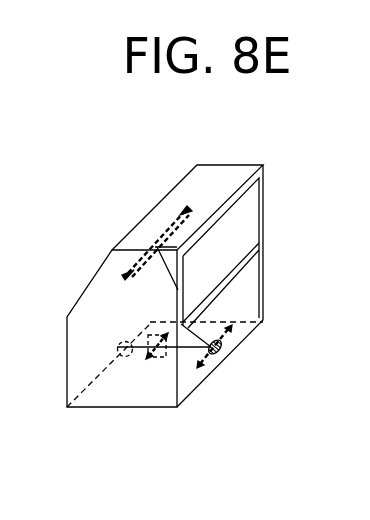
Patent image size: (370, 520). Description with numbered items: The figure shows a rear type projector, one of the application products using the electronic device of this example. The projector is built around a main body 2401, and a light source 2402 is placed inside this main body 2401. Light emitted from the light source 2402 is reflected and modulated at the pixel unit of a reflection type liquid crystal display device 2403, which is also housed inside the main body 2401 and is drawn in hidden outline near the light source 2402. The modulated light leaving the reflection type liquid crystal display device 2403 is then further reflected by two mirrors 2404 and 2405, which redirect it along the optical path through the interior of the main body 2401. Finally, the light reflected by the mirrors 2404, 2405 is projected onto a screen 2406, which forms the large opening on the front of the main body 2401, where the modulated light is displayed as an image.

The main body 2401 is at (207, 175).
The light source 2402 is at (123, 358).
The reflection type liquid crystal display device 2403 is at (150, 358).
The mirror 2404 is at (216, 352).
The mirror 2405 is at (162, 238).
The screen 2406 is at (236, 216).